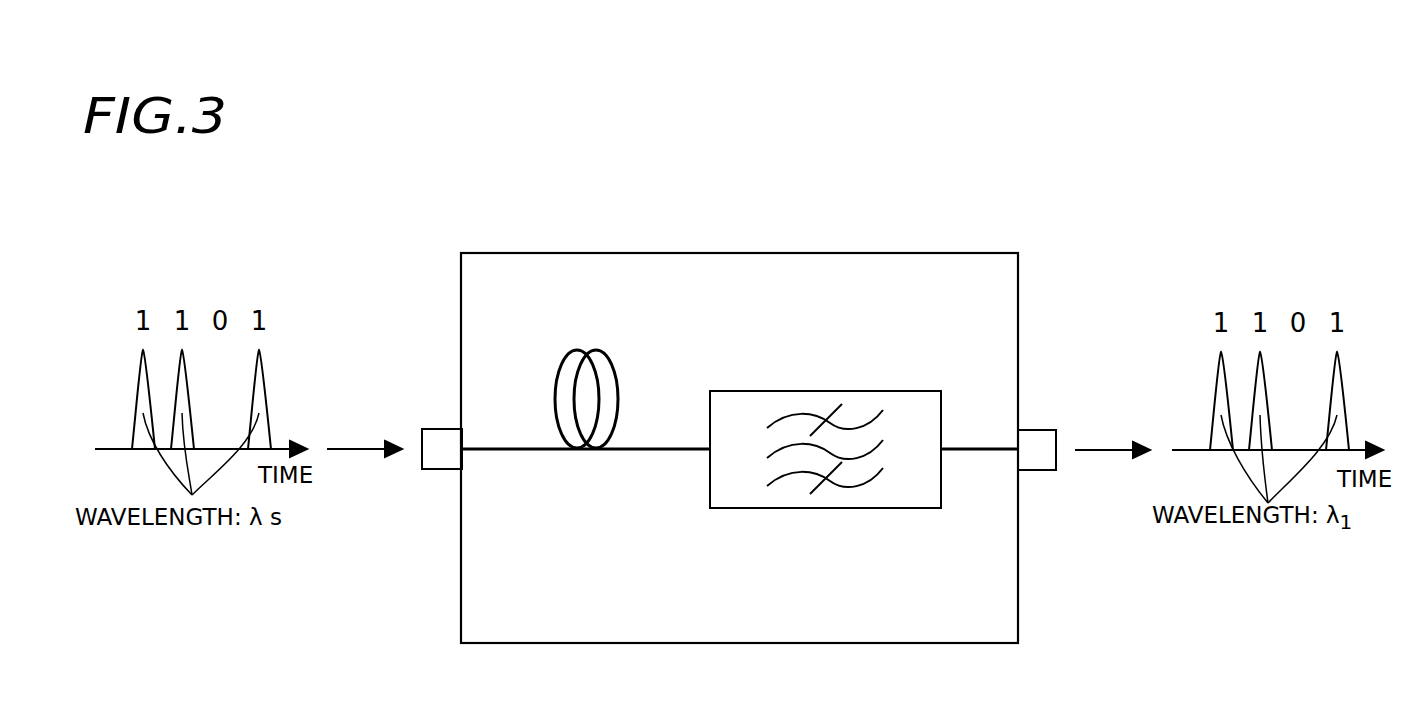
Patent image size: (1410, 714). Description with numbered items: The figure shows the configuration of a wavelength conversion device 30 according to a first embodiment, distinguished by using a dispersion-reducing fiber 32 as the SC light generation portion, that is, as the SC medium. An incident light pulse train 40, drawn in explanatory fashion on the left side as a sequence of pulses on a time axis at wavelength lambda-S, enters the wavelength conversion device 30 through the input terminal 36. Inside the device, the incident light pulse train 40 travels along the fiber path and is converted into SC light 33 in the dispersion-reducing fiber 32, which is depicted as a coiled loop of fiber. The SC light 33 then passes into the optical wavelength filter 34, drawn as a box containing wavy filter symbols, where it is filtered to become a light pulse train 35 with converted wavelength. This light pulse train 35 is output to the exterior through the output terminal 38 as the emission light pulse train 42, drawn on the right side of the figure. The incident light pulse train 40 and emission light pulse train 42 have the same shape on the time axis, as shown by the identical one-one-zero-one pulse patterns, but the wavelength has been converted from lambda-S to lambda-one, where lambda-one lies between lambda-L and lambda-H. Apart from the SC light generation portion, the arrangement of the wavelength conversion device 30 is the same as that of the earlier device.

The wavelength conversion device 30 is at (960, 253).
The dispersion-reducing fiber 32 is at (587, 350).
The SC light 33 is at (652, 449).
The optical wavelength filter 34 is at (826, 391).
The light pulse train with converted wavelength 35 is at (960, 449).
The input terminal 36 is at (440, 429).
The output terminal 38 is at (1038, 430).
The incident light pulse train 40 is at (363, 449).
The emission light pulse train 42 is at (1093, 450).